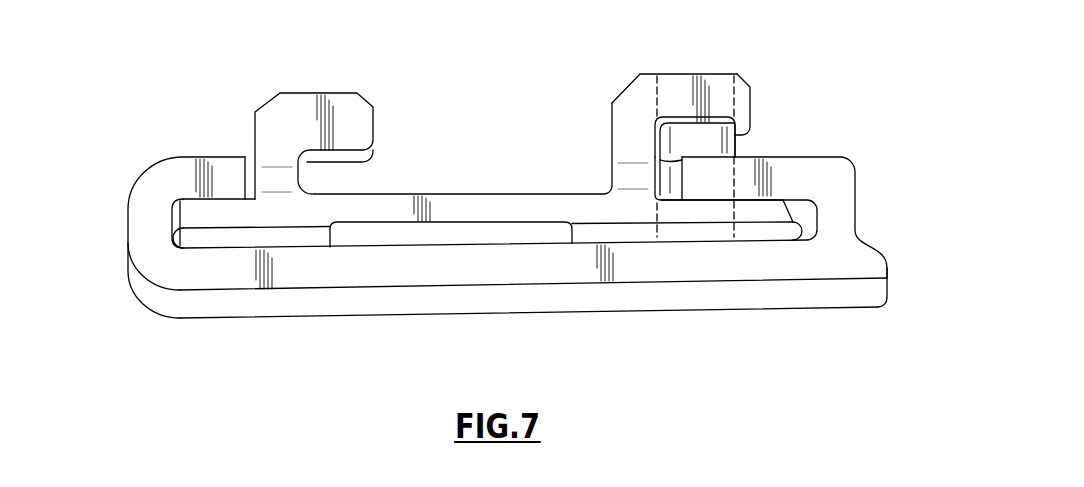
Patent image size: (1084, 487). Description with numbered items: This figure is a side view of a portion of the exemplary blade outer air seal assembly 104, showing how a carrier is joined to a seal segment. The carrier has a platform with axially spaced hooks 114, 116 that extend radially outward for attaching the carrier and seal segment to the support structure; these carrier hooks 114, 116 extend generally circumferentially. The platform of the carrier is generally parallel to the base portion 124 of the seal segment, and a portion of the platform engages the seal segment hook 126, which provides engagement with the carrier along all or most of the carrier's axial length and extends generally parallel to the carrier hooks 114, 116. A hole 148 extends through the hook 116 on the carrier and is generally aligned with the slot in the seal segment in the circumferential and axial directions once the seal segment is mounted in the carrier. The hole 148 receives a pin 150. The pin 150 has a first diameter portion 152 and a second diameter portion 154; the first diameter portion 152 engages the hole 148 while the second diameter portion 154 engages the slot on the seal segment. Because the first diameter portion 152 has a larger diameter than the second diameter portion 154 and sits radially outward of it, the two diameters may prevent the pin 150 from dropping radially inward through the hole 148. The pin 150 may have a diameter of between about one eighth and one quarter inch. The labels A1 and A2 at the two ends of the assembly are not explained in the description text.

The blade outer air seal assembly 104 is at (826, 77).
The hook 114 is at (308, 105).
The hook 116 is at (685, 93).
The base portion 124 is at (527, 262).
The hook 126 is at (792, 173).
The hole 148 is at (708, 72).
The pin 150 is at (710, 127).
The first diameter portion 152 is at (736, 142).
The second diameter portion 154 is at (675, 190).
The first end A1 is at (128, 234).
The second end A2 is at (887, 270).